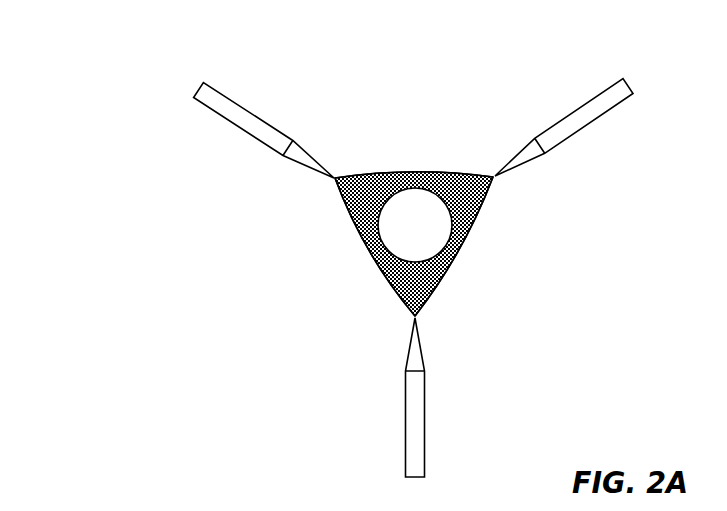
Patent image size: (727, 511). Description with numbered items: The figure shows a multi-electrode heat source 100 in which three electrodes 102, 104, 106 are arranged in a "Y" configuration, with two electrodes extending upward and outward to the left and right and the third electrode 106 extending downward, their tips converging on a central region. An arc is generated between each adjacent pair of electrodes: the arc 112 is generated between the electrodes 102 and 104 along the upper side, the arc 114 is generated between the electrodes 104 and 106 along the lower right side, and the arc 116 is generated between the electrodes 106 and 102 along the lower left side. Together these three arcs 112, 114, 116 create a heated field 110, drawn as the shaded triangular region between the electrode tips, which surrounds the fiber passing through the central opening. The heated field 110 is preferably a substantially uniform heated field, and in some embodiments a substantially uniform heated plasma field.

The multi-electrode heat source 100 is at (66, 28).
The electrode 102 is at (223, 92).
The electrode 104 is at (588, 100).
The electrode 106 is at (425, 406).
The heated field 110 is at (363, 213).
The arc 112 is at (437, 172).
The arc 114 is at (465, 248).
The arc 116 is at (363, 243).